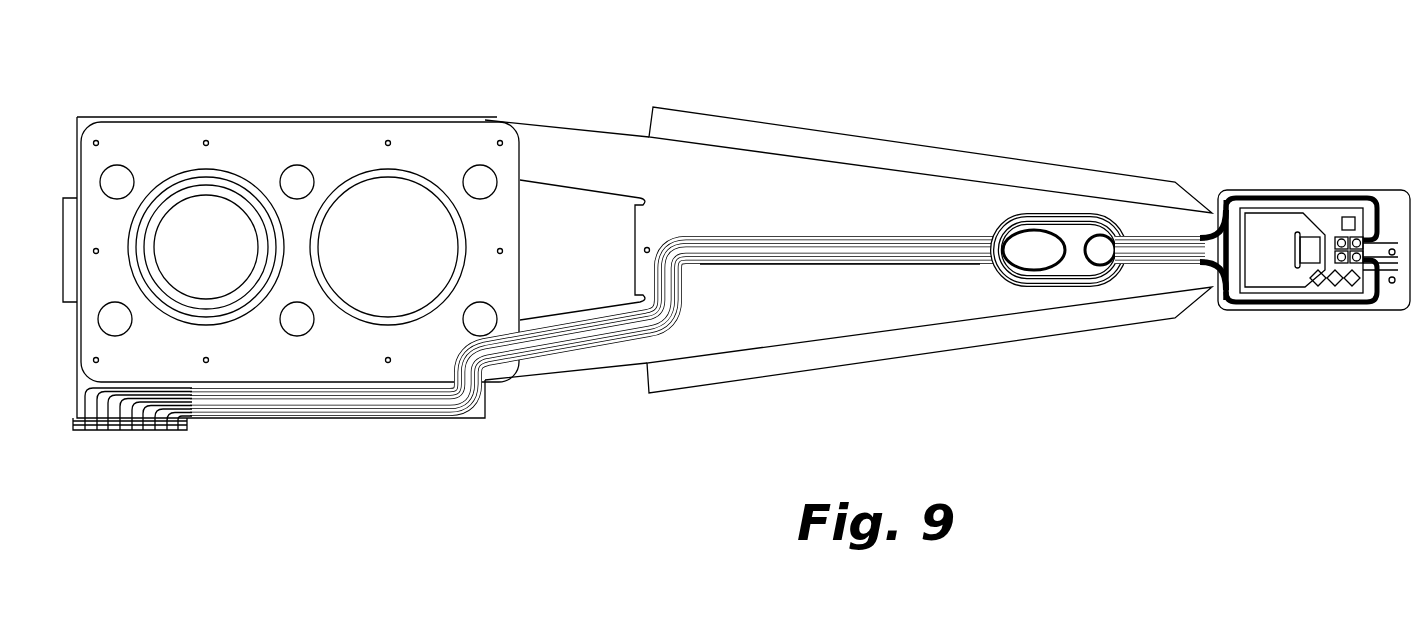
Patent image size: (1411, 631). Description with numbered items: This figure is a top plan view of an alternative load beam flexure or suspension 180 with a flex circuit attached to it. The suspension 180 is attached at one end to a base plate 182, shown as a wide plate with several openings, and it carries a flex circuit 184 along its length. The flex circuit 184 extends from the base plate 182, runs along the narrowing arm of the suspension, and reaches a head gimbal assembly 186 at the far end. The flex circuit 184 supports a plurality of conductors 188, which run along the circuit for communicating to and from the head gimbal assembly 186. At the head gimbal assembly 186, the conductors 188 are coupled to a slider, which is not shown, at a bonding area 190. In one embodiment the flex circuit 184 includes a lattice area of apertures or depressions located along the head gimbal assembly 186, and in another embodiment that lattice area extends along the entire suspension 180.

The load beam suspension 180 is at (770, 110).
The base plate 182 is at (333, 120).
The flex circuit 184 is at (862, 239).
The conductors 188 is at (896, 264).
The head gimbal assembly 186 is at (1284, 188).
The bonding area 190 is at (1365, 230).